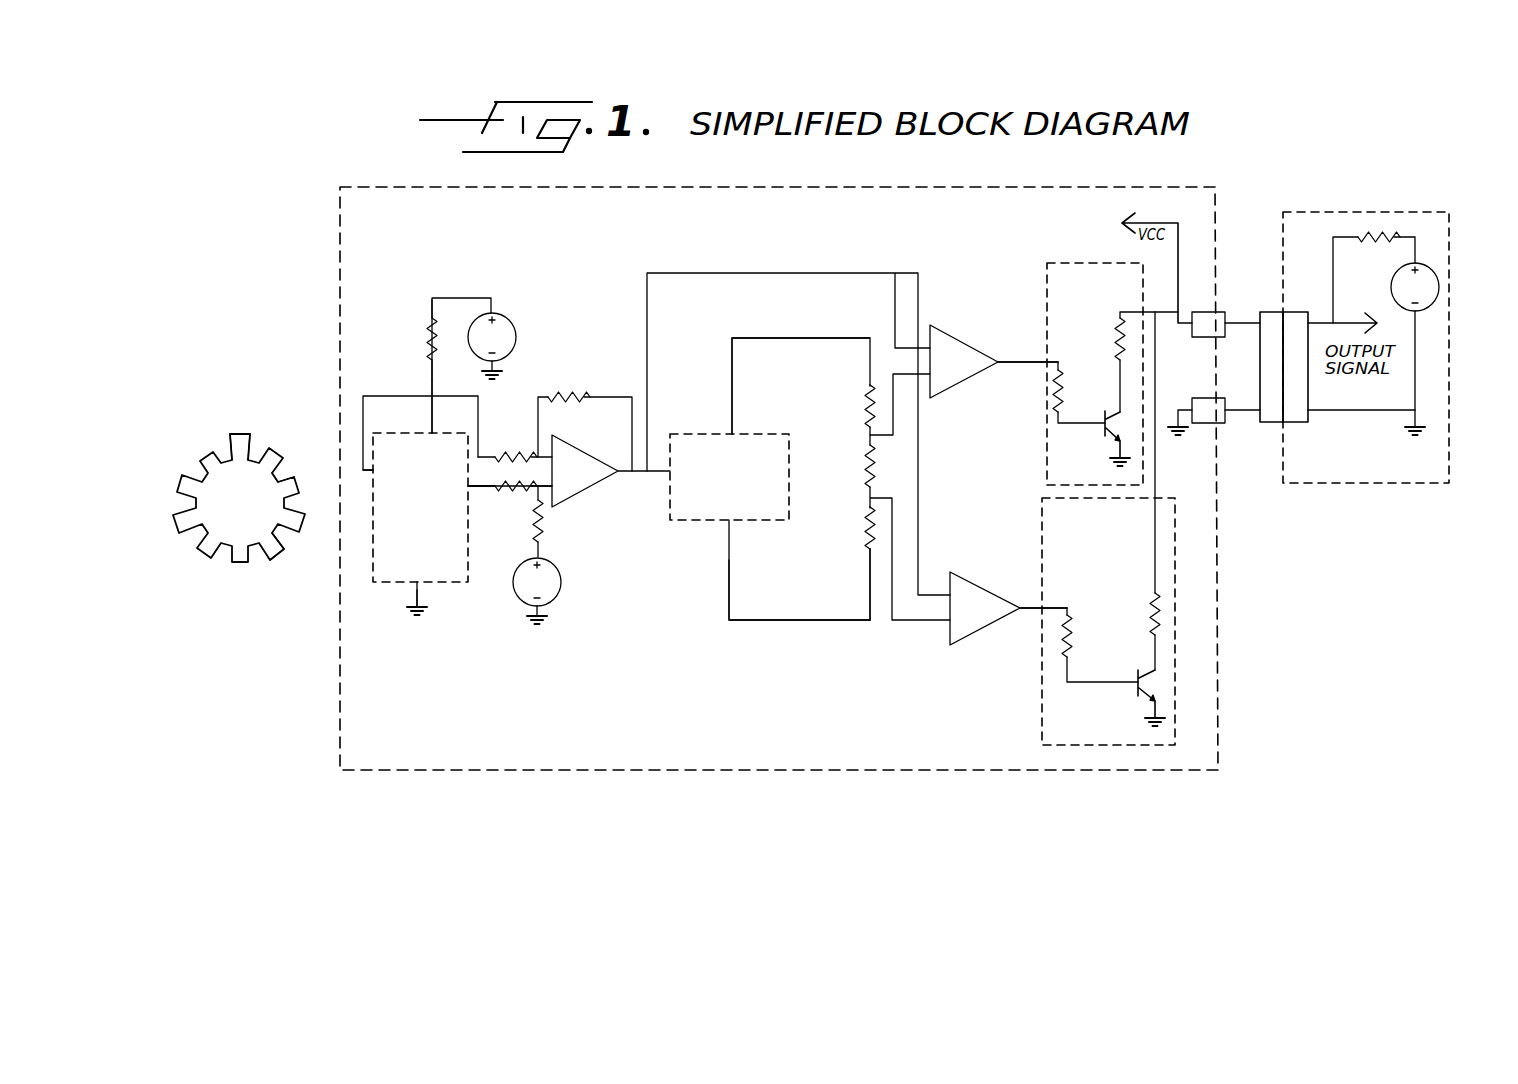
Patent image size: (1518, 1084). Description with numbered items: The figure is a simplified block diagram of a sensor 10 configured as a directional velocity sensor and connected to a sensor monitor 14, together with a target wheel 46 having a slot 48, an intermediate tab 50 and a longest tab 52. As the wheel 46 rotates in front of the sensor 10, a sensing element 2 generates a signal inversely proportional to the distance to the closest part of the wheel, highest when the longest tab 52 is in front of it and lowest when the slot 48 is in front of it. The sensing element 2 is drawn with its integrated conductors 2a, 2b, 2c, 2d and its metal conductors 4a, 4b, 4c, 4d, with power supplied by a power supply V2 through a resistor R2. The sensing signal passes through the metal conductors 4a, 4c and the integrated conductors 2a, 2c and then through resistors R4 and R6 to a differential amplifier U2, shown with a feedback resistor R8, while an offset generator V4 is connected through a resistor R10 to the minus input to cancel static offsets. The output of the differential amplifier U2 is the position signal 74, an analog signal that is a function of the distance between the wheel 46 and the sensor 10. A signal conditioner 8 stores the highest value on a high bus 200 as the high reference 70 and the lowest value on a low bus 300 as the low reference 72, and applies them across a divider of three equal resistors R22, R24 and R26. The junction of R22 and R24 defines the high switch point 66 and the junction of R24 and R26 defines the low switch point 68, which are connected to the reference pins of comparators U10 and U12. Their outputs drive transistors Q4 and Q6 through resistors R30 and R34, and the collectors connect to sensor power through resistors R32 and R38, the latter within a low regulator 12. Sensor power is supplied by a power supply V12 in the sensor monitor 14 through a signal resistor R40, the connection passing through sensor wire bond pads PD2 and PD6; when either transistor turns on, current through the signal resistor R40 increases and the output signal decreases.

The sensor 10 is at (779, 466).
The sensor monitor 14 is at (1387, 337).
The target wheel 46 is at (239, 498).
The slot 48 is at (284, 483).
The intermediate tab 50 is at (190, 478).
The longest tab 52 is at (305, 572).
The sensing element 2 is at (420, 507).
The integrated conductor 2a is at (481, 489).
The integrated conductor 2b is at (446, 406).
The integrated conductor 2c is at (361, 483).
The integrated conductor 2d is at (433, 596).
The metal conductor 4a is at (492, 486).
The metal conductor 4b is at (445, 381).
The metal conductor 4c is at (420, 446).
The metal conductor 4d is at (416, 588).
The signal conditioner 8 is at (729, 477).
The low regulator 12 is at (1108, 621).
The high switch point 66 is at (994, 411).
The low switch point 68 is at (998, 545).
The high reference 70 is at (795, 376).
The low reference 72 is at (784, 582).
The position signal 74 is at (798, 424).
The high bus 200 is at (801, 386).
The low bus 300 is at (799, 590).
The resistor R2 is at (449, 339).
The power supply V2 is at (492, 346).
The resistor R4 is at (515, 448).
The resistor R6 is at (510, 479).
The resistor R8 is at (585, 423).
The resistor R10 is at (524, 521).
The offset generator V4 is at (537, 591).
The differential amplifier U2 is at (611, 471).
The resistor R22 is at (855, 410).
The resistor R24 is at (907, 497).
The resistor R26 is at (853, 563).
The comparator U10 is at (994, 361).
The comparator U12 is at (1008, 608).
The resistor R30 is at (1079, 392).
The resistor R32 is at (1129, 362).
The transistor Q4 is at (1105, 438).
The resistor R34 is at (1100, 645).
The resistor R38 is at (1139, 491).
The transistor Q6 is at (1138, 698).
The sensor wire bond pad PD2 is at (1226, 324).
The sensor wire bond pad PD6 is at (1214, 416).
The signal resistor R40 is at (1374, 269).
The power supply V12 is at (1415, 349).